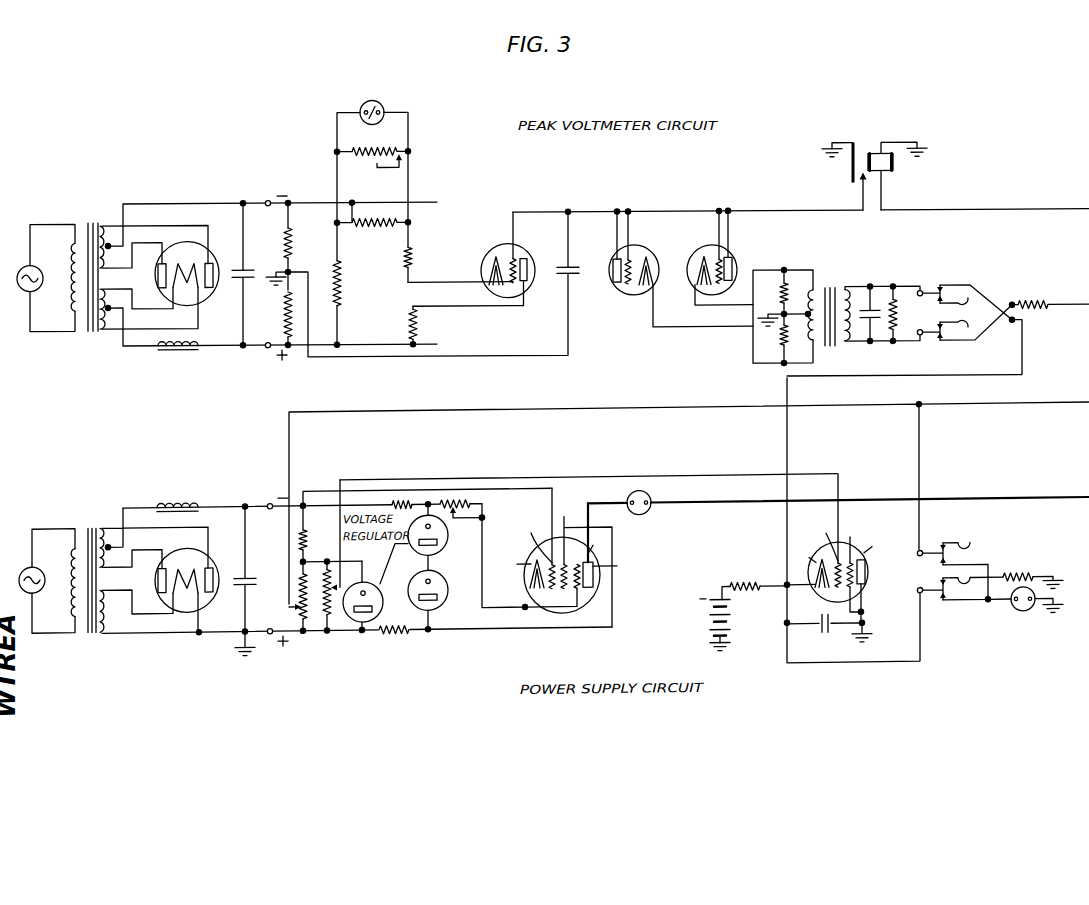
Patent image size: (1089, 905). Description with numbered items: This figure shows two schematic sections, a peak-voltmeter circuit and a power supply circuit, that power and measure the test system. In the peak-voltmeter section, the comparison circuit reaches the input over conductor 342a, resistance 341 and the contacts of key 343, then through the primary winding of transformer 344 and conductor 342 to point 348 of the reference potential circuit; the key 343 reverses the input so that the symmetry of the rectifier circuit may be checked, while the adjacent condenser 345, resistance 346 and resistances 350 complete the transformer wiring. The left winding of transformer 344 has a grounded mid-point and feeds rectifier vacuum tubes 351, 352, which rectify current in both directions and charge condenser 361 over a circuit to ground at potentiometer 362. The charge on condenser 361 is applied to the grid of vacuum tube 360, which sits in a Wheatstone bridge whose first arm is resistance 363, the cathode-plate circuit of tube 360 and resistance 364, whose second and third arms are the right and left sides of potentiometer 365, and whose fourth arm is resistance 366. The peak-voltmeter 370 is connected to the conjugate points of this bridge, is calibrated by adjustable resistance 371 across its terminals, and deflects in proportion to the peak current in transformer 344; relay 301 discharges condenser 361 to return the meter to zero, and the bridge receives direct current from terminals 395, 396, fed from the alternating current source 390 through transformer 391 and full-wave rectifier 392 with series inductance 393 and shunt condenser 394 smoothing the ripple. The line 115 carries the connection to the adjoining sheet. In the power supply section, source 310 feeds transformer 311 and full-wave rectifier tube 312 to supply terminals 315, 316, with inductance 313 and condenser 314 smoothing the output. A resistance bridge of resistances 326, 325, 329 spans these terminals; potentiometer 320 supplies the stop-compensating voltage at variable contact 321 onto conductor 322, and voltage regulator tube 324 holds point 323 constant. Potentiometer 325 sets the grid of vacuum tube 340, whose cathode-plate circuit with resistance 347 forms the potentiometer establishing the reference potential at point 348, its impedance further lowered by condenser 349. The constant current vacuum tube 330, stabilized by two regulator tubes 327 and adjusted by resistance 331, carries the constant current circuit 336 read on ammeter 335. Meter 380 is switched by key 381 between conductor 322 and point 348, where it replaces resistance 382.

The signal output line 115 is at (1009, 212).
The relay 301 is at (888, 176).
The source of alternating current 310 is at (42, 566).
The transformer 311 is at (89, 524).
The full-wave rectifier tube 312 is at (203, 604).
The inductance 313 is at (178, 503).
The condenser 314 is at (250, 586).
The supply terminal 315 is at (267, 503).
The supply terminal 316 is at (272, 636).
The potentiometer 320 is at (303, 631).
The variable contact 321 is at (290, 609).
The conductor 322 is at (288, 437).
The point 323 is at (300, 568).
The voltage regulator tube 324 is at (366, 624).
The potentiometer 325 is at (326, 629).
The resistance 326 is at (397, 634).
The regulator tubes 327 is at (441, 580).
The resistance 329 is at (300, 548).
The constant current vacuum tube 330 is at (570, 618).
The resistance 331 is at (452, 502).
The ammeter 335 is at (628, 503).
The constant current circuit 336 is at (967, 507).
The vacuum tube 340 is at (866, 594).
The resistance 341 is at (1038, 305).
The conductor 342 is at (786, 545).
The conductor 342a is at (1069, 313).
The key 343 is at (970, 297).
The transformer 344 is at (827, 288).
The capacitor 345 is at (866, 344).
The resistor 346 is at (893, 300).
The resistance 347 is at (736, 578).
The point 348 is at (786, 594).
The condenser 349 is at (826, 641).
The voltage divider resistors 350 is at (782, 280).
The rectifier vacuum tube 351 is at (728, 256).
The rectifier vacuum tube 352 is at (642, 254).
The vacuum tube 360 is at (526, 255).
The condenser 361 is at (582, 278).
The potentiometer 362 is at (286, 325).
The resistance 363 is at (410, 320).
The resistance 364 is at (412, 254).
The potentiometer 365 is at (362, 227).
The resistance 366 is at (341, 283).
The peak-voltmeter 370 is at (382, 105).
The adjustable resistance 371 is at (363, 158).
The meter 380 is at (1016, 620).
The key 381 is at (952, 562).
The resistance 382 is at (1019, 584).
The source of alternating current 390 is at (38, 275).
The transformer 391 is at (90, 220).
The full-wave rectifier 392 is at (198, 243).
The series inductance 393 is at (172, 349).
The shunt condenser 394 is at (237, 283).
The terminal 395 is at (265, 201).
The terminal 396 is at (266, 348).